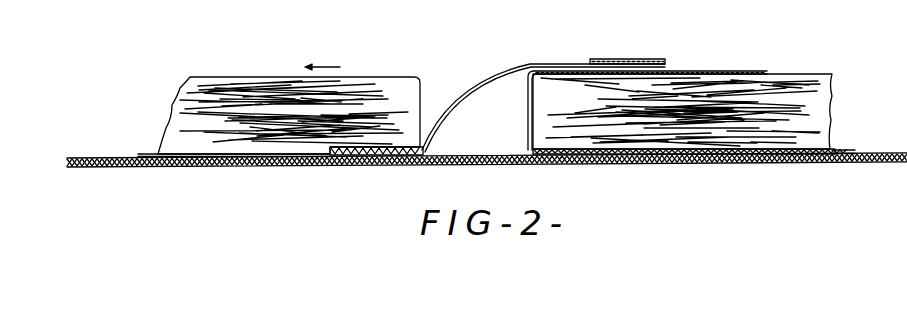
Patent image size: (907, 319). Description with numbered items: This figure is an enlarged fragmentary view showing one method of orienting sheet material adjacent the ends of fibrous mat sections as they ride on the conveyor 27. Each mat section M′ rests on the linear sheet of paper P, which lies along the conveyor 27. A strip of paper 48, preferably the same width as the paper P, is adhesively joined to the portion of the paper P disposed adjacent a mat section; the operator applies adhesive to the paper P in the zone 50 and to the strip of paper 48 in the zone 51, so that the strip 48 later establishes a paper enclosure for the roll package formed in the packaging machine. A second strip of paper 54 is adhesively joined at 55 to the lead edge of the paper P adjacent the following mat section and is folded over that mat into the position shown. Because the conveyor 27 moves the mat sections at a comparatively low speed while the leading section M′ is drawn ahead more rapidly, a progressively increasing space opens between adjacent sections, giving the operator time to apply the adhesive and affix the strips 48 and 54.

The conveyor 27 is at (112, 168).
The strip of paper 48 is at (487, 77).
The adhesive zone on paper P 50 is at (380, 155).
The adhesive zone on strip 48 51 is at (624, 59).
The strip of paper 54 is at (527, 113).
The adhesive joint 55 is at (583, 154).
The linear sheet of paper P is at (152, 153).
The leading section of mat and paper M′ is at (248, 88).